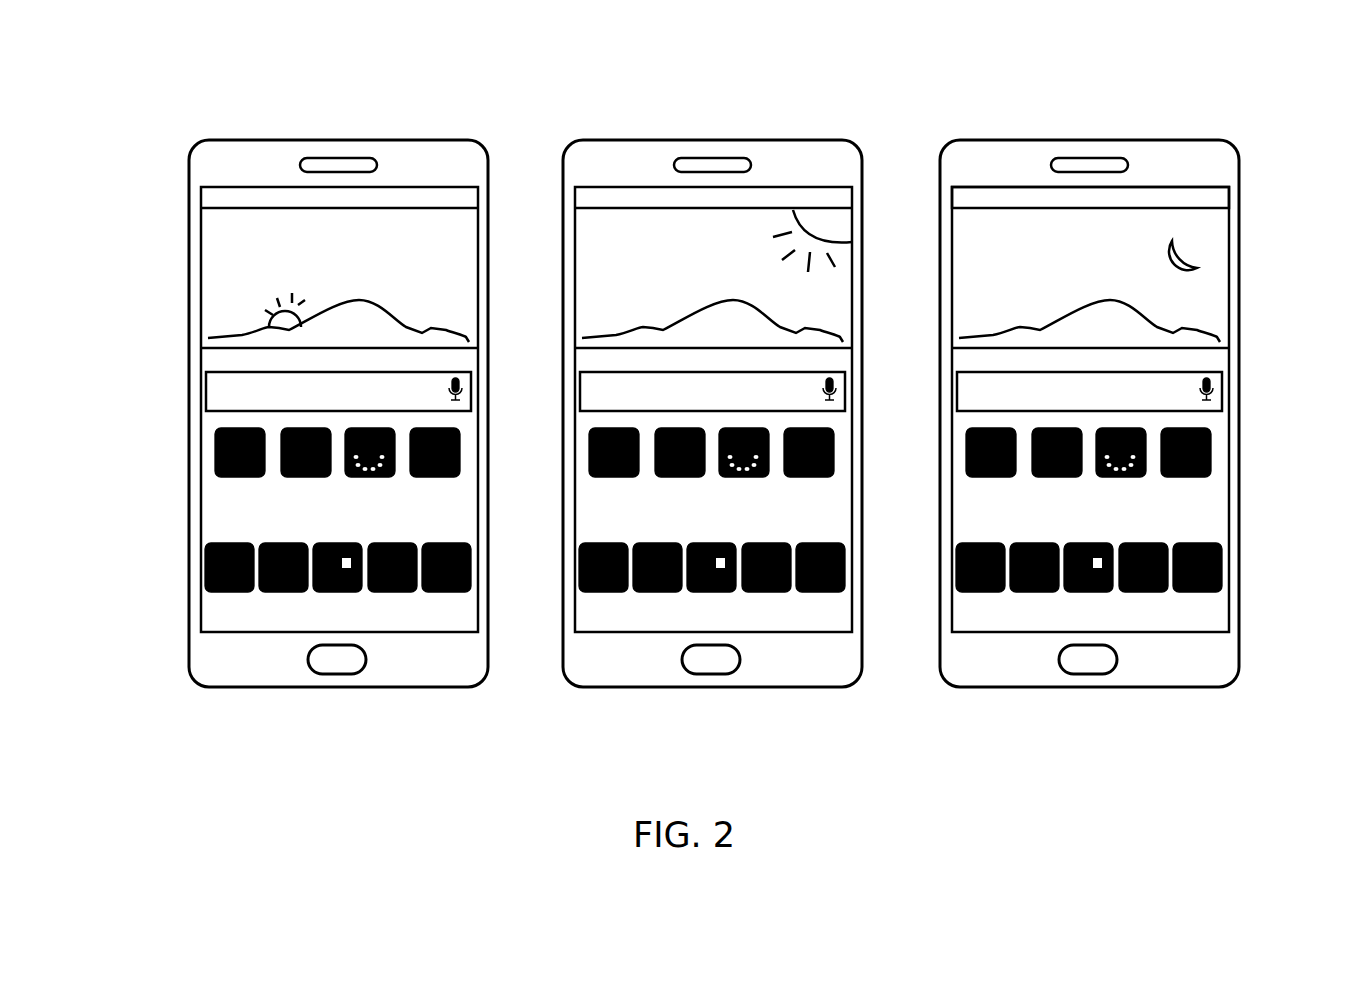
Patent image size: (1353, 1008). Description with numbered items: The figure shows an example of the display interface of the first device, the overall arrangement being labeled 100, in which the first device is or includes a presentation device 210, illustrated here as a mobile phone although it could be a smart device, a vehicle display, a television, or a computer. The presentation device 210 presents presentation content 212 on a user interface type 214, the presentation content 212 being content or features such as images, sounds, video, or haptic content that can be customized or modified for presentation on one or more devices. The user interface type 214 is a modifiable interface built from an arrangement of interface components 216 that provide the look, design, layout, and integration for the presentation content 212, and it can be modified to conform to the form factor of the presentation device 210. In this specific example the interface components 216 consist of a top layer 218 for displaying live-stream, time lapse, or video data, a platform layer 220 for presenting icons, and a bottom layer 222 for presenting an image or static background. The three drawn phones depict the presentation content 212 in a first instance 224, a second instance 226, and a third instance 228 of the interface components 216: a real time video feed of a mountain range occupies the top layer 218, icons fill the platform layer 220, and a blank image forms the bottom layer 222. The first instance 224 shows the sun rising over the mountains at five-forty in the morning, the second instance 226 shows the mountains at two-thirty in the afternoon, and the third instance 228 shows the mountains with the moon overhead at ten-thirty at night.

The electronic device / mobile terminal system 100 is at (253, 90).
The presentation device 210 is at (490, 147).
The presentation content 212 is at (1132, 246).
The user interface type 214 is at (1125, 143).
The interface components 216 is at (277, 409).
The top layer 218 is at (1131, 413).
The platform layer 220 is at (1141, 516).
The bottom layer 222 is at (724, 557).
The first instance 224 is at (237, 687).
The second instance 226 is at (610, 687).
The third instance 228 is at (1003, 688).